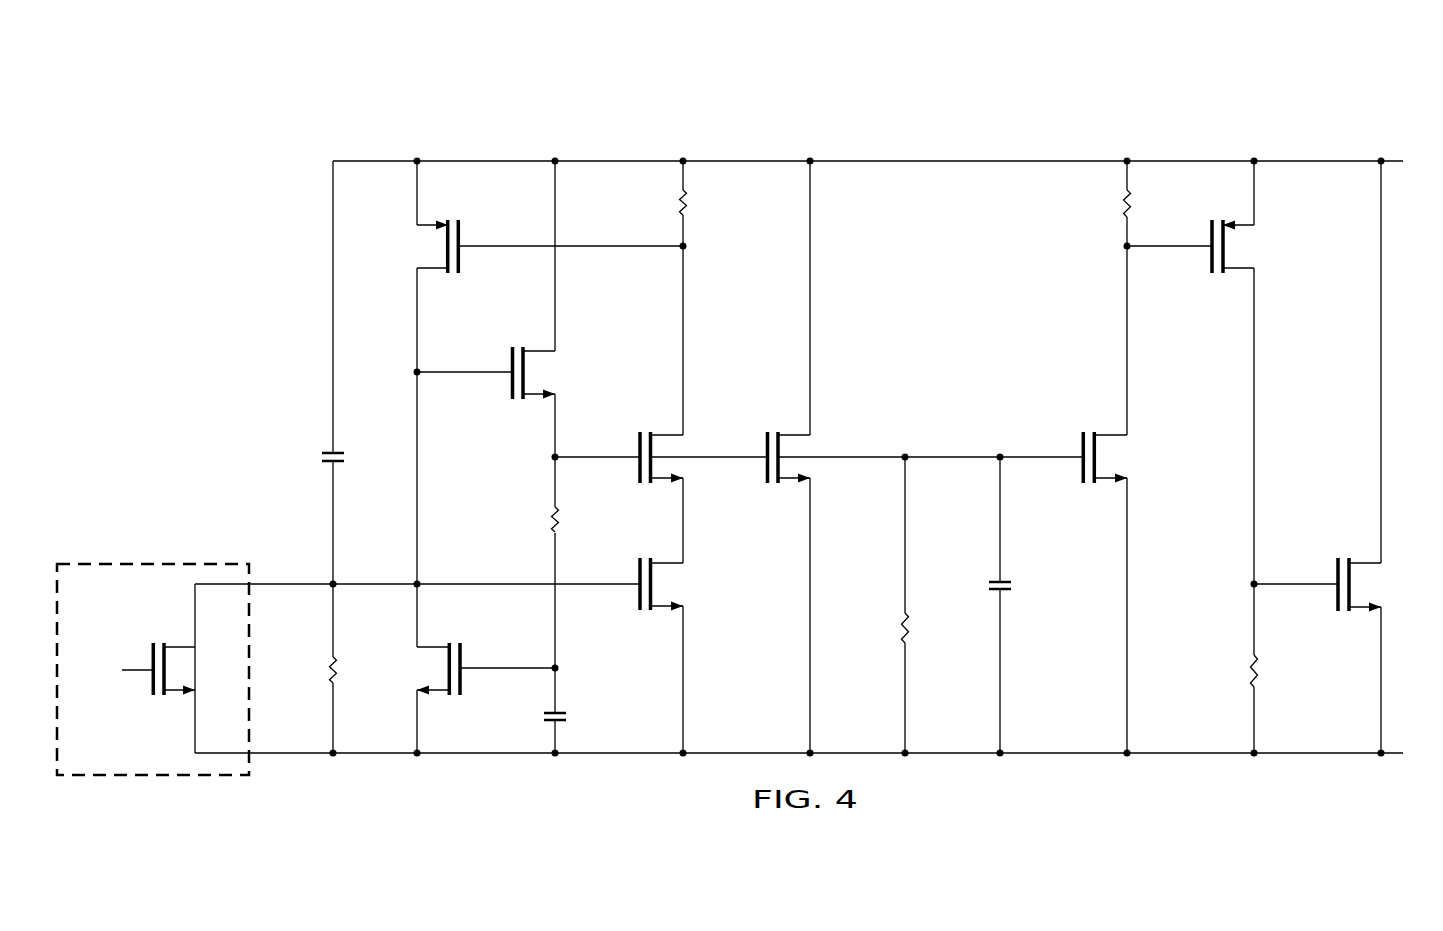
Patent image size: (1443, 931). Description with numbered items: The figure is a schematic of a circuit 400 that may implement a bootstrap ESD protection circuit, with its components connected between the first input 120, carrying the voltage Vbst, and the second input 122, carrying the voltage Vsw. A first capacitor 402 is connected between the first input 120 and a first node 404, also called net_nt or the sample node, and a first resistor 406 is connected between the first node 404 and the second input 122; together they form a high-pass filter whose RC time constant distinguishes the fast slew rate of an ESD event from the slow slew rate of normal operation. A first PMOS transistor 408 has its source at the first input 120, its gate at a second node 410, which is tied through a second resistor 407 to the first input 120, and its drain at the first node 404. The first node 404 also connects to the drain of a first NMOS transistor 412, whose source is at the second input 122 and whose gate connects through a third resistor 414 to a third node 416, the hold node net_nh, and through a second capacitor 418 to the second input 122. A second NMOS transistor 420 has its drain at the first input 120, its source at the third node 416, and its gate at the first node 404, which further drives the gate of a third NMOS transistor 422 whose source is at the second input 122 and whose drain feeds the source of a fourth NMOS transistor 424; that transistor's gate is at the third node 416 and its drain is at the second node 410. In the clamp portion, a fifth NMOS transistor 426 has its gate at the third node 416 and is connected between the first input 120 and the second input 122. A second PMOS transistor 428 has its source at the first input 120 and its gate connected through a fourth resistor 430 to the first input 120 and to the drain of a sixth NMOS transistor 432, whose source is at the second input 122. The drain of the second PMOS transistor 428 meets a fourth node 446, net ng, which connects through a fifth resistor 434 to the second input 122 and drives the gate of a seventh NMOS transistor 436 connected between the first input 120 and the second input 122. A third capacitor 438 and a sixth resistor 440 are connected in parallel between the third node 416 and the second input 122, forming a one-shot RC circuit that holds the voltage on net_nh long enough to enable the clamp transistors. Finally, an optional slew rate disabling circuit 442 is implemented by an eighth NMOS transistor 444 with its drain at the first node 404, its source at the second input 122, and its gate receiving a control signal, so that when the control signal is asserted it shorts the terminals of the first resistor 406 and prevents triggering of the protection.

The circuit 400 is at (256, 115).
The first input 120 is at (1396, 159).
The second input 122 is at (1393, 755).
The first capacitor 402 is at (322, 457).
The first node 404 is at (313, 583).
The first resistor 406 is at (330, 670).
The second resistor 407 is at (679, 202).
The first PMOS transistor 408 is at (462, 240).
The second node 410 is at (620, 248).
The first NMOS transistor 412 is at (462, 683).
The third resistor 414 is at (552, 525).
The third node 416 is at (614, 456).
The second capacitor 418 is at (545, 718).
The second NMOS transistor 420 is at (511, 364).
The third NMOS transistor 422 is at (638, 598).
The fourth NMOS transistor 424 is at (638, 470).
The fifth NMOS transistor 426 is at (766, 470).
The second PMOS transistor 428 is at (1209, 256).
The fourth resistor 430 is at (1124, 200).
The sixth NMOS transistor 432 is at (1080, 468).
The fifth resistor 434 is at (1251, 670).
The seventh NMOS transistor 436 is at (1335, 574).
The third capacitor 438 is at (990, 582).
The sixth resistor 440 is at (901, 627).
The slew rate disabling circuit 442 is at (118, 557).
The eighth NMOS transistor 444 is at (151, 680).
The fourth node 446 is at (1298, 586).